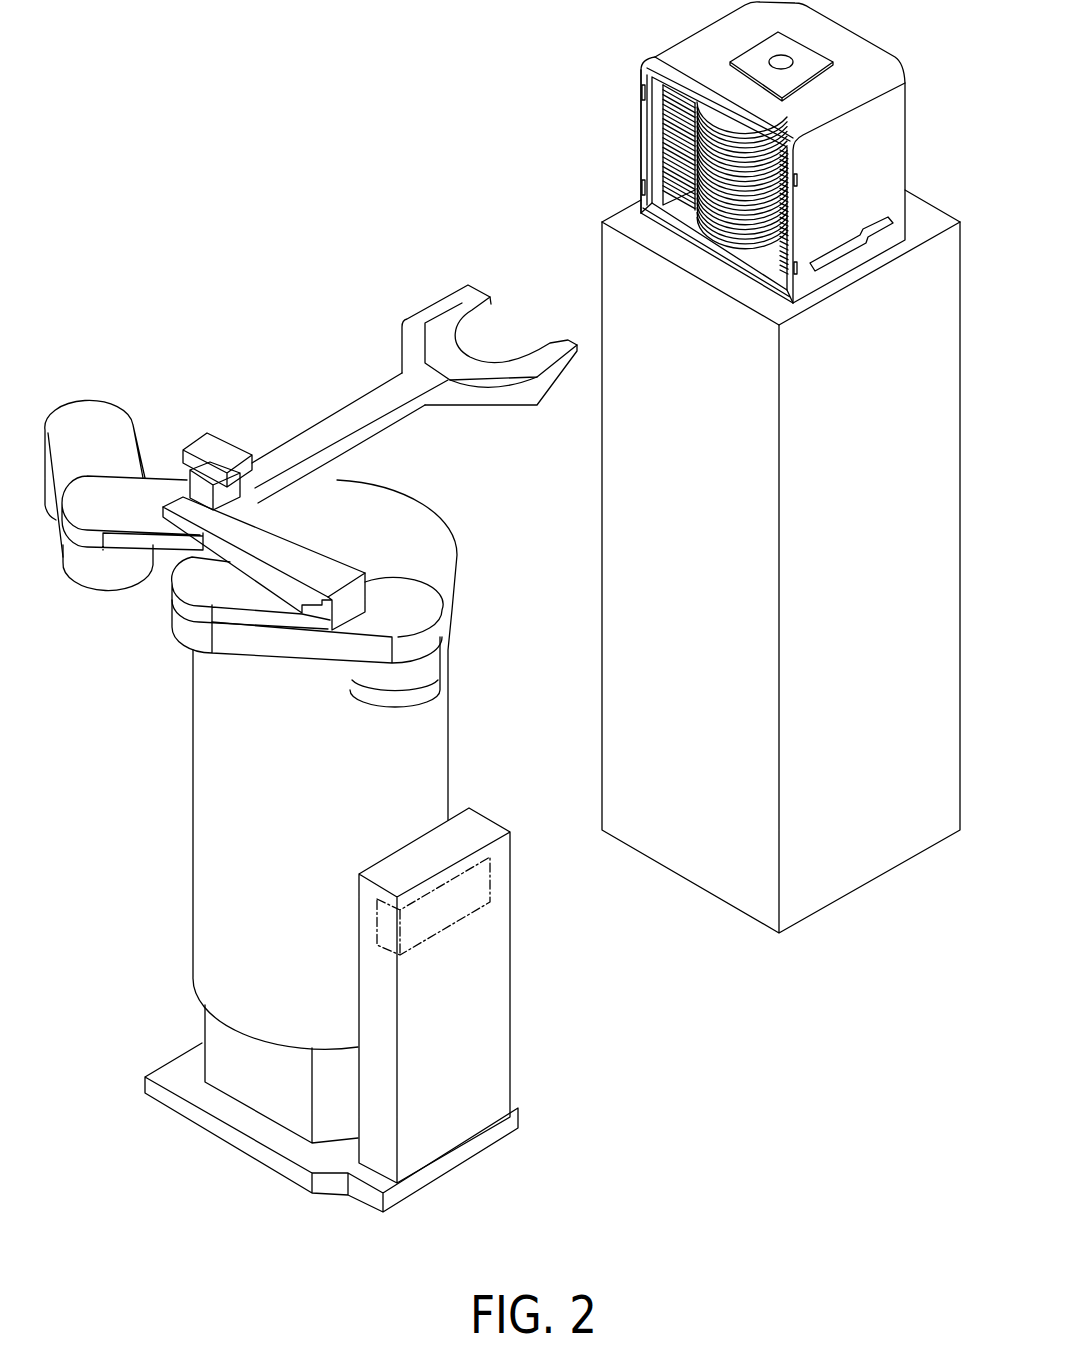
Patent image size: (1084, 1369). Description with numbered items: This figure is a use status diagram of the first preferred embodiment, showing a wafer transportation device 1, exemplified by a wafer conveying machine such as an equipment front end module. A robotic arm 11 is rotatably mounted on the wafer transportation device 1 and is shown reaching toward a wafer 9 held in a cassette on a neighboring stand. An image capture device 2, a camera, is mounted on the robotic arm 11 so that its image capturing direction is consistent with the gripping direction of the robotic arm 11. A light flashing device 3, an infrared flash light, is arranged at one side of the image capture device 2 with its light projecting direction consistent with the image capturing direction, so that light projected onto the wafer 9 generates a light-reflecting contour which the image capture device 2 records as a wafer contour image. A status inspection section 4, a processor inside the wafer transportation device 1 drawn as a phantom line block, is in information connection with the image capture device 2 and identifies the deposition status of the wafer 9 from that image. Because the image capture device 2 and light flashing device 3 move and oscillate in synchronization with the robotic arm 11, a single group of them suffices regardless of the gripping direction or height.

The wafer transportation device 1 is at (152, 938).
The image capture device 2 is at (202, 507).
The light flashing device 3 is at (205, 437).
The status inspection section 4 is at (492, 884).
The wafer 9 is at (765, 248).
The robotic arm 11 is at (287, 427).